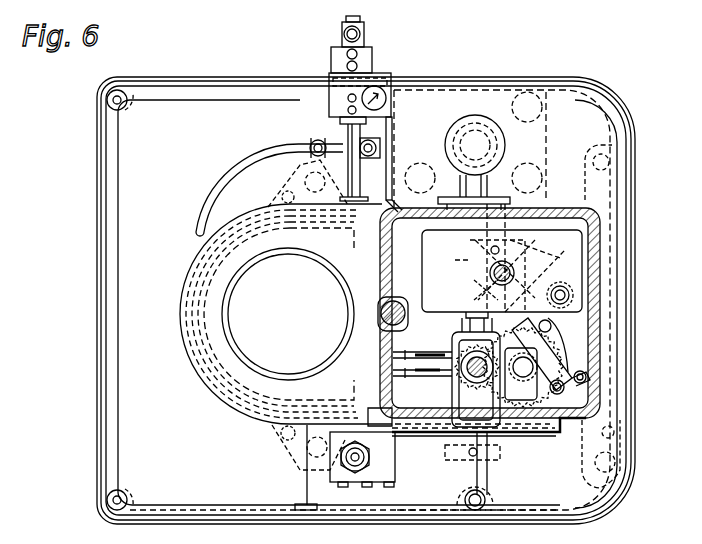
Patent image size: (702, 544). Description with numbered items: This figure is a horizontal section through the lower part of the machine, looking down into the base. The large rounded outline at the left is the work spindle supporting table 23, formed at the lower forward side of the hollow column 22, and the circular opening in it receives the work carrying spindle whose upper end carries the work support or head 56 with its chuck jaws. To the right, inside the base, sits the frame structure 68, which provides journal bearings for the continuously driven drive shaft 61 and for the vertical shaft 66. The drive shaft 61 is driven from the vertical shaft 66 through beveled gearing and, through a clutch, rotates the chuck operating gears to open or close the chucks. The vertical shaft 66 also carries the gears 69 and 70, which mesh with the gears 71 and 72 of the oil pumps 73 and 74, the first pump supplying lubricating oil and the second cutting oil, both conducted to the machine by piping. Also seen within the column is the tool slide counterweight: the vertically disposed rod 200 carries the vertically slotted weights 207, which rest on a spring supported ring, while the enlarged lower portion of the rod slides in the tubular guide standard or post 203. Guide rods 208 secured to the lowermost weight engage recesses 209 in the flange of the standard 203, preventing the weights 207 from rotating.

The hollow column 22 is at (600, 270).
The work spindle supporting table 23 is at (250, 377).
The work support or head 56 is at (250, 342).
The drive shaft 61 is at (393, 365).
The vertical shaft 66 is at (477, 380).
The frame structure 68 is at (499, 436).
The gear 69 is at (455, 345).
The gear 70 is at (452, 392).
The gear 71 is at (466, 320).
The gear 72 is at (522, 433).
The oil pump 73 is at (476, 138).
The oil pump 74 is at (560, 336).
The vertically disposed rod 200 is at (512, 274).
The tubular guide standard or post 203 is at (545, 292).
The weights 207 is at (425, 247).
The guide rods 208 is at (535, 200).
The recesses 209 is at (540, 212).